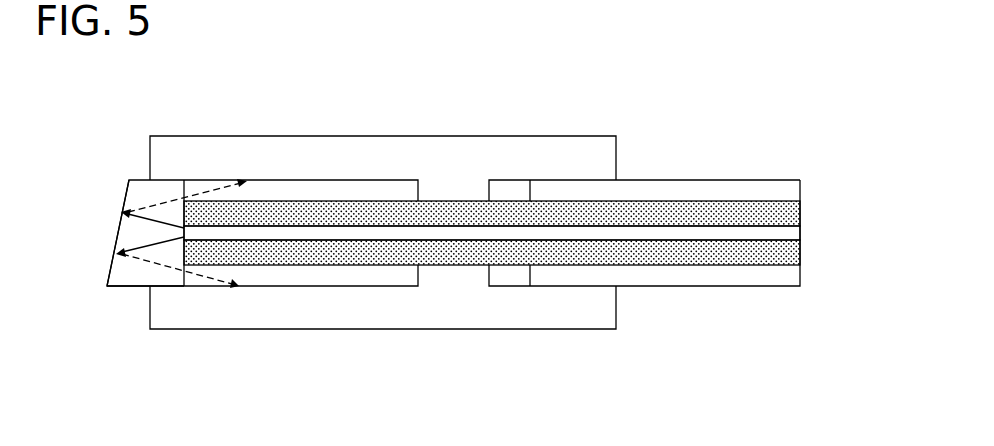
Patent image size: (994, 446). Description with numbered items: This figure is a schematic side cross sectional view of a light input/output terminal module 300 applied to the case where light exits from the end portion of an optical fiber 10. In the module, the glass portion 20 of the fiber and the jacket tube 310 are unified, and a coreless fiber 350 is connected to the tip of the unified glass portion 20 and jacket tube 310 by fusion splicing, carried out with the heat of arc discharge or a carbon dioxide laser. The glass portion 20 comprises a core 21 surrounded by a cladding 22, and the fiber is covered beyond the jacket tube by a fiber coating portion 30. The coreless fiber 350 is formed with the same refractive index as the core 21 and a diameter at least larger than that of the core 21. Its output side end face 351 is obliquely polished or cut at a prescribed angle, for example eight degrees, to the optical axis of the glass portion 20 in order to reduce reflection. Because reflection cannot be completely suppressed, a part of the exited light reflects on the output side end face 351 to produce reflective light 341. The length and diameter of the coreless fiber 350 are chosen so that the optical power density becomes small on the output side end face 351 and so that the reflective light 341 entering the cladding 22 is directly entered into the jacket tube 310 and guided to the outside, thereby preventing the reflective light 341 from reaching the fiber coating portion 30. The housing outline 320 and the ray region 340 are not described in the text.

The light input/output terminal module 300 is at (385, 185).
The housing 320 is at (550, 137).
The optical fiber 10 is at (495, 246).
The jacket tube 310 is at (208, 180).
The glass portion 20 is at (495, 291).
The core 21 is at (624, 233).
The cladding 22 is at (686, 255).
The fiber coating portion 30 is at (764, 277).
The light path conversion prism 340 is at (117, 222).
The reflective light 341 is at (147, 288).
The coreless fiber 350 is at (162, 178).
The output side end face 351 is at (122, 208).